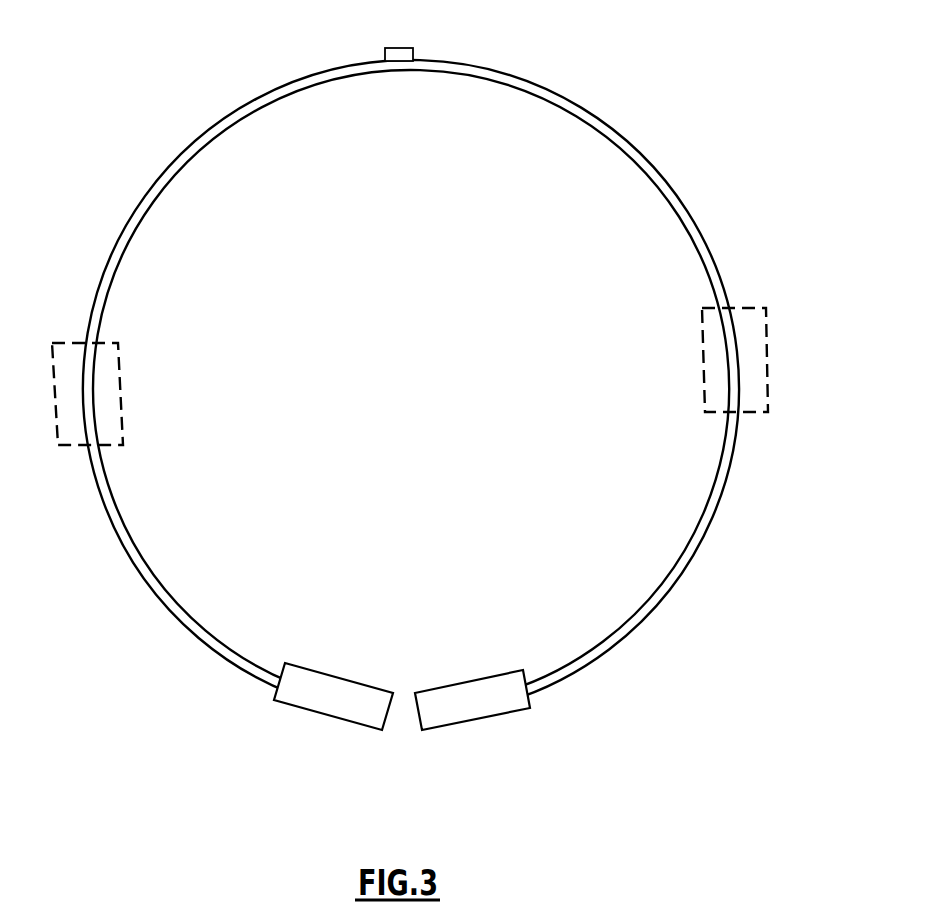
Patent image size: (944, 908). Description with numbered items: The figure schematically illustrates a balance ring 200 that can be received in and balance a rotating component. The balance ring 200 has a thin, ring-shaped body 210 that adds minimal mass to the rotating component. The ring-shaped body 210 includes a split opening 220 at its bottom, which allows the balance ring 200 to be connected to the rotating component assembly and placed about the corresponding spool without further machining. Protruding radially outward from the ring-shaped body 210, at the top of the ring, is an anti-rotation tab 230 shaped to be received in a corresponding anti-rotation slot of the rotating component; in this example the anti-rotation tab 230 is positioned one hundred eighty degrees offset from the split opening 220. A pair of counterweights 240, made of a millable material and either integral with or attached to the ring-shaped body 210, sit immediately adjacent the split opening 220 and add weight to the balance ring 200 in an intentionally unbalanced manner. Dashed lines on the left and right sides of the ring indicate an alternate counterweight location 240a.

The balance ring 200 is at (690, 125).
The ring-shaped body 210 is at (718, 288).
The split opening 220 is at (407, 702).
The anti-rotation tab 230 is at (402, 52).
The counterweights 240 is at (328, 694).
The counterweight location 240a is at (120, 378).